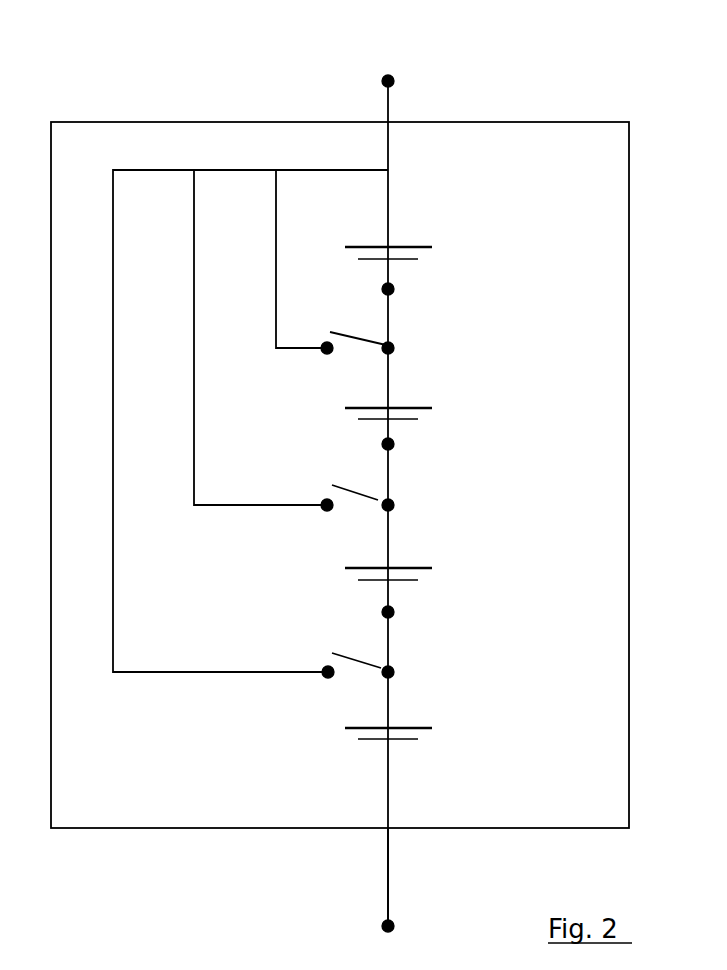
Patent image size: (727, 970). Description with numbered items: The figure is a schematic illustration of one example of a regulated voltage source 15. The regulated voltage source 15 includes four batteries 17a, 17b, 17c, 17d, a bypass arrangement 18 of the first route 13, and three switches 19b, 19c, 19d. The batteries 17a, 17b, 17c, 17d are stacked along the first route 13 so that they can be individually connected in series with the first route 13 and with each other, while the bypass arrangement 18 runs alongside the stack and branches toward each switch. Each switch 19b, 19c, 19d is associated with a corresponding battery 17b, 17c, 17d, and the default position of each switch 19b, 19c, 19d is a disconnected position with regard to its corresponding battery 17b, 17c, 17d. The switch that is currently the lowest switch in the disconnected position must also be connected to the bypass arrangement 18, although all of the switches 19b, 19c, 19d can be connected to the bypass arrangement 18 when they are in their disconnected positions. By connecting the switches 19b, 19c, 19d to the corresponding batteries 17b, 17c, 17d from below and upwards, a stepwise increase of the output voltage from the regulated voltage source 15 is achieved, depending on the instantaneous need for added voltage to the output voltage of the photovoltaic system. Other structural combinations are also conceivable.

The regulated voltage source 15 is at (503, 118).
The first route 13 is at (390, 878).
The bypass arrangement 18 is at (148, 672).
The battery 17a is at (422, 735).
The battery 17b is at (422, 576).
The battery 17c is at (422, 414).
The battery 17d is at (422, 253).
The switch 19b is at (362, 663).
The switch 19c is at (360, 494).
The switch 19d is at (360, 337).